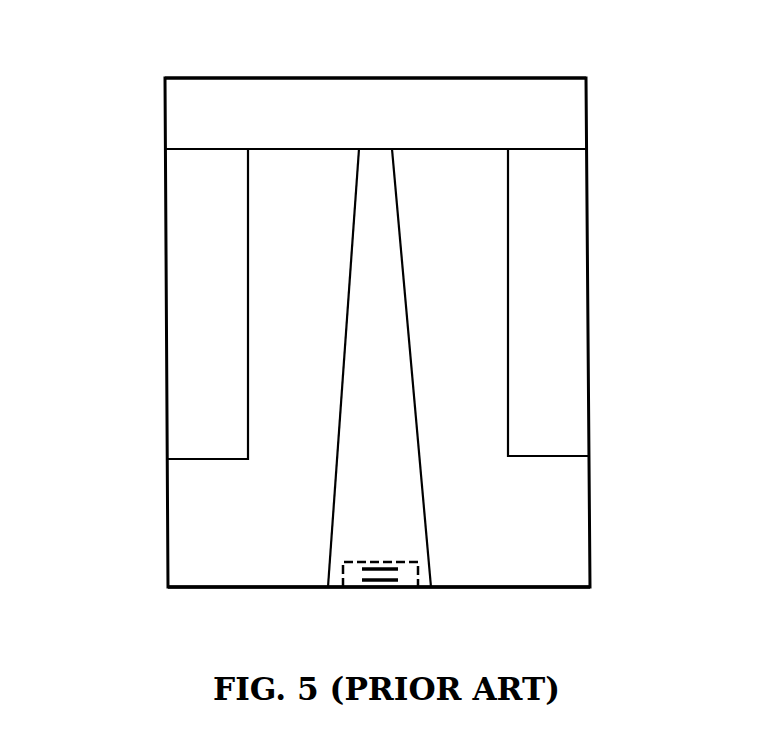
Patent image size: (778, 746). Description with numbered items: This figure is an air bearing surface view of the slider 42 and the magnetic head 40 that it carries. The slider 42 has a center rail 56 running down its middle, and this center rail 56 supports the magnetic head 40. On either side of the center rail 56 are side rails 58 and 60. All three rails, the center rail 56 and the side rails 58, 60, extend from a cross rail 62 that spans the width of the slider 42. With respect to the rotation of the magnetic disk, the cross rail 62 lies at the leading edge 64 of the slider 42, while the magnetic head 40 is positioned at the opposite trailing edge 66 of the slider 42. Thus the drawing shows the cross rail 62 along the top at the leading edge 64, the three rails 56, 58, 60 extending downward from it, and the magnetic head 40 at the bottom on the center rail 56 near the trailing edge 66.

The magnetic head 40 is at (353, 591).
The slider 42 is at (156, 536).
The center rail 56 is at (365, 252).
The side rail 58 is at (178, 218).
The side rail 60 is at (562, 213).
The cross rail 62 is at (292, 86).
The leading edge 64 is at (440, 74).
The trailing edge 66 is at (493, 590).